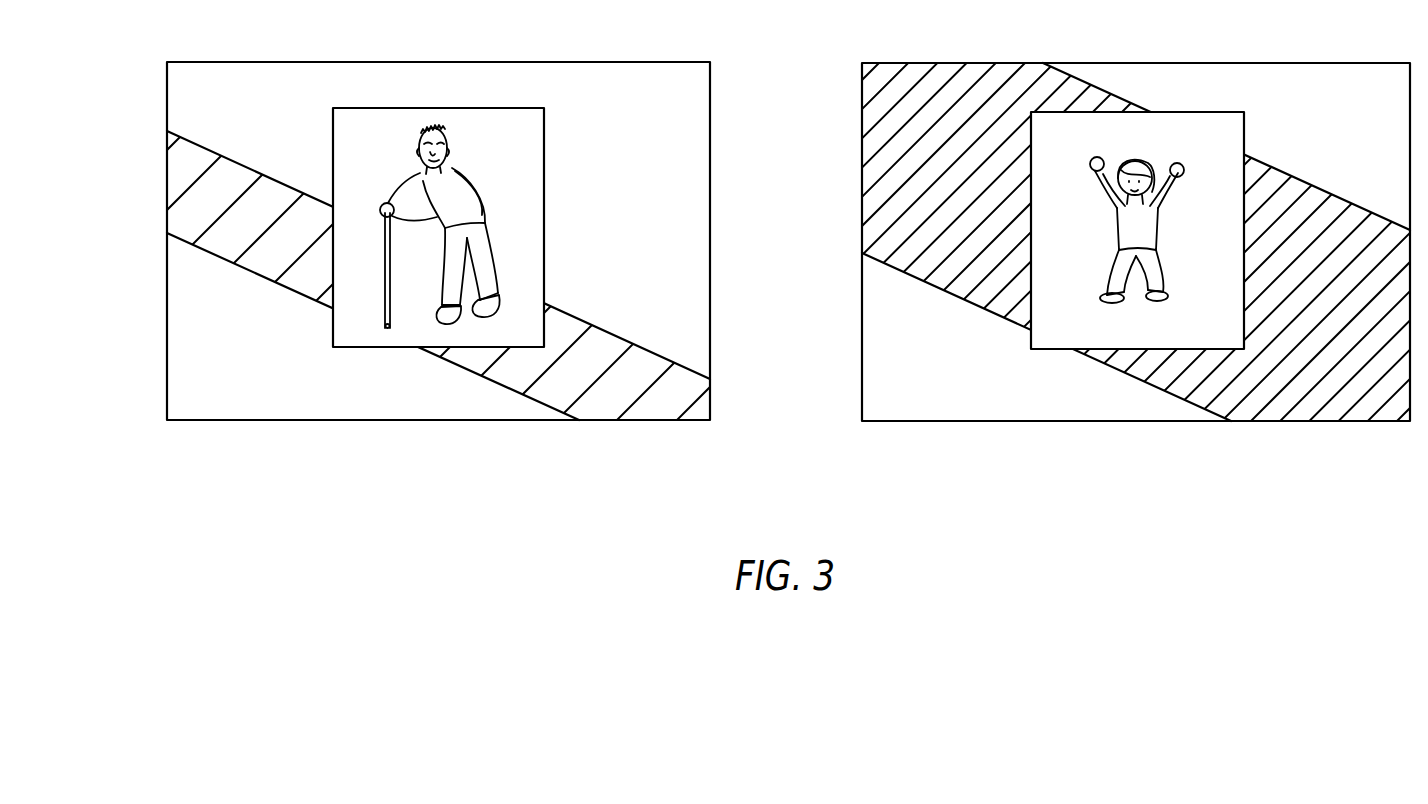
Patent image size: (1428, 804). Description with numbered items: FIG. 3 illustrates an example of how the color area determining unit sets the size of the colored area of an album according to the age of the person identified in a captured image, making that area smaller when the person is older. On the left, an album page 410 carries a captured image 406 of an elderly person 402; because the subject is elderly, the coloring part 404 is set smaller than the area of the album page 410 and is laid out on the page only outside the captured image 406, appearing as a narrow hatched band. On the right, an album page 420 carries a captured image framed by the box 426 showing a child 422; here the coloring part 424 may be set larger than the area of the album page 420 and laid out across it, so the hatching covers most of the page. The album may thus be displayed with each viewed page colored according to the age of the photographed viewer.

The album page 410 is at (607, 62).
The elderly person 402 is at (460, 163).
The coloring part 404 is at (593, 405).
The captured image 406 is at (545, 208).
The album page 420 is at (1305, 63).
The child 422 is at (1157, 160).
The coloring part 424 is at (1317, 407).
The detection frame around person in second image 426 is at (1245, 133).